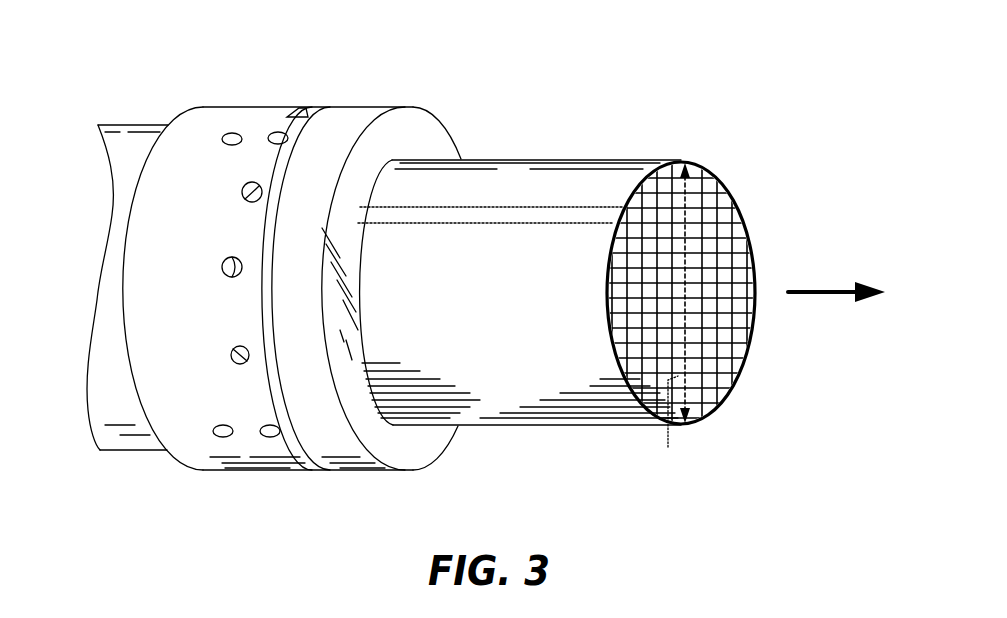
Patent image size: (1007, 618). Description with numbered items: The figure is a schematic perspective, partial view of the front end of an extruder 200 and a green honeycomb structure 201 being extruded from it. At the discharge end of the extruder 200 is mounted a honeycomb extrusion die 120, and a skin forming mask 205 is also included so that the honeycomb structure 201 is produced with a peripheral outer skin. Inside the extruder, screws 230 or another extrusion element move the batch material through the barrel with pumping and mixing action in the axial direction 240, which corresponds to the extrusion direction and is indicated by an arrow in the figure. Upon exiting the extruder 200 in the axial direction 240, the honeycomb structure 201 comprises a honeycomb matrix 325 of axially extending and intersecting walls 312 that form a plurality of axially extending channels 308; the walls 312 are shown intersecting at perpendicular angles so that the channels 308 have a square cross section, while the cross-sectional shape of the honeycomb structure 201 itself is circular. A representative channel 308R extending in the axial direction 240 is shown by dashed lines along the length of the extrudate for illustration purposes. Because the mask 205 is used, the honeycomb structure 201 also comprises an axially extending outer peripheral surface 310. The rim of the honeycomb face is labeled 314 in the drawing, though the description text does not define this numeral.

The extruder 200 is at (168, 85).
The honeycomb extrusion die 120 is at (315, 98).
The skin forming mask 205 is at (373, 107).
The honeycomb structure 201 is at (494, 440).
The outer peripheral surface 310 is at (573, 428).
The representative channel 308R is at (516, 226).
The mesh rim 314 is at (742, 230).
The channels 308 is at (742, 305).
The intersecting walls 312 is at (725, 399).
The honeycomb matrix 325 is at (704, 200).
The screws 230 is at (675, 424).
The axial direction 240 is at (838, 288).